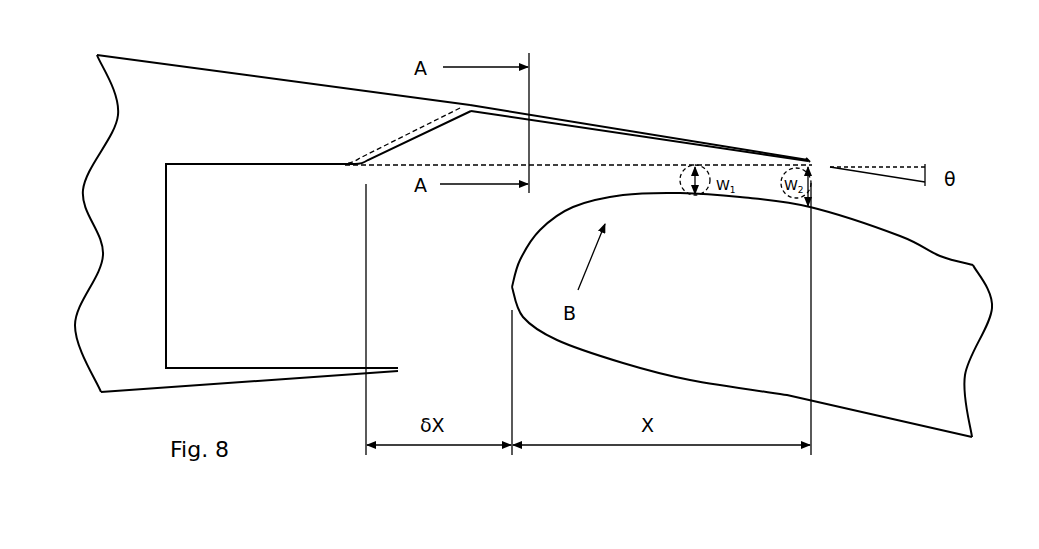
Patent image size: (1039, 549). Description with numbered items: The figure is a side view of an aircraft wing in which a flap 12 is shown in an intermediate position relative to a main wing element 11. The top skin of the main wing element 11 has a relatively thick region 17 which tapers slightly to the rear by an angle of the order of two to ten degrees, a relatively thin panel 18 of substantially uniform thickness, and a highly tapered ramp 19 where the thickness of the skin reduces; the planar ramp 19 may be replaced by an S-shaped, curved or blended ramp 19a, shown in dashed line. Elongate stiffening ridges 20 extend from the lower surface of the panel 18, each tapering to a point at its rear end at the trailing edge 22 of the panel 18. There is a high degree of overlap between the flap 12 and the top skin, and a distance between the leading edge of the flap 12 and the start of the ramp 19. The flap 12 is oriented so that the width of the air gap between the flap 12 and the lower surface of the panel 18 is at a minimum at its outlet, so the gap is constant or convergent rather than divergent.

The main wing element 11 is at (185, 82).
The flap 12 is at (938, 260).
The relatively thick region 17 is at (275, 142).
The relatively thin panel 18 is at (587, 122).
The ramp 19 is at (382, 153).
The blended ramp 19a is at (412, 128).
The stiffening ridge 20 is at (552, 165).
The trailing edge 22 is at (808, 160).